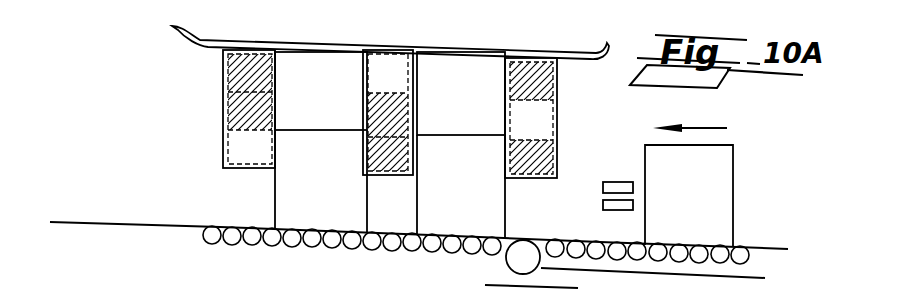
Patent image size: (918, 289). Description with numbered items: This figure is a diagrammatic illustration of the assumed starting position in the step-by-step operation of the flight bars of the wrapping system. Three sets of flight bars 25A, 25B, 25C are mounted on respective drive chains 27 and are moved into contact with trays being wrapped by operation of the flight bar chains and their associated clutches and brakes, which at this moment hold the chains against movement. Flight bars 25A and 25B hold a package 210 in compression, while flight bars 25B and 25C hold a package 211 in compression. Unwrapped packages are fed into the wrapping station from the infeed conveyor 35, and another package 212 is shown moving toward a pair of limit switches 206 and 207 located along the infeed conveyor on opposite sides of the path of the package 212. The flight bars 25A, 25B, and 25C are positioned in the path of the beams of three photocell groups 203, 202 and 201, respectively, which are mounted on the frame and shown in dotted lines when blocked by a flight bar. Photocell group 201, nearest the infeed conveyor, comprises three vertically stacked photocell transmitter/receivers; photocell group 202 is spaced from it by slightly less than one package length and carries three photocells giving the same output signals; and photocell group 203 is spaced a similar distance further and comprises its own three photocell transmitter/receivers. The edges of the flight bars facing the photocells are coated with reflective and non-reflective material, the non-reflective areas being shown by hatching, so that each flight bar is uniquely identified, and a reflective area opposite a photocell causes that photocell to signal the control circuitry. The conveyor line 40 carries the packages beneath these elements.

The drive chains 27 is at (304, 44).
The flight bar 25A is at (223, 93).
The flight bar 25B is at (367, 75).
The flight bar 25C is at (510, 77).
The photocell group 201 is at (507, 102).
The photocell group 202 is at (367, 102).
The photocell group 203 is at (223, 132).
The limit switch 206 is at (603, 187).
The limit switch 207 is at (603, 205).
The package 210 is at (295, 195).
The package 211 is at (440, 201).
The package 212 is at (712, 210).
The infeed conveyor 35 is at (506, 260).
The conveyor 40 is at (205, 228).